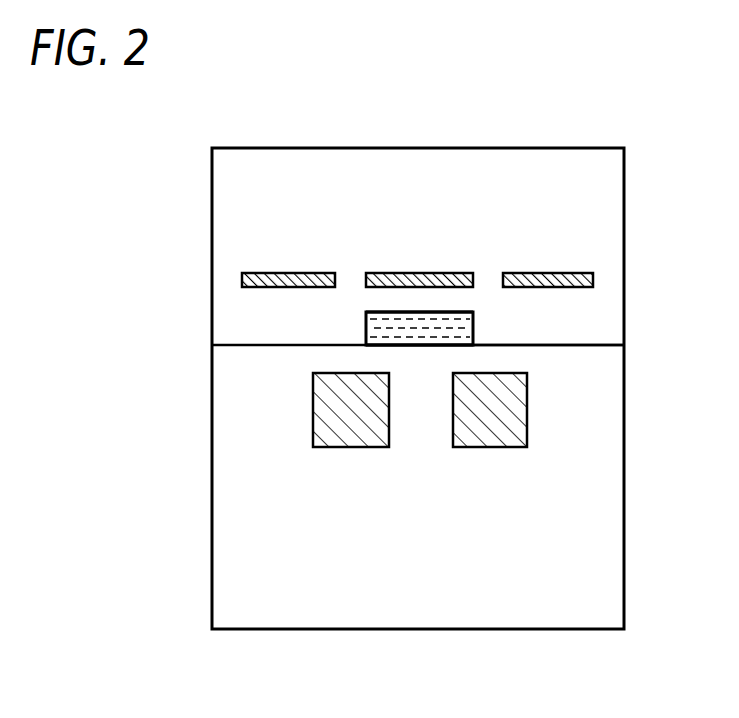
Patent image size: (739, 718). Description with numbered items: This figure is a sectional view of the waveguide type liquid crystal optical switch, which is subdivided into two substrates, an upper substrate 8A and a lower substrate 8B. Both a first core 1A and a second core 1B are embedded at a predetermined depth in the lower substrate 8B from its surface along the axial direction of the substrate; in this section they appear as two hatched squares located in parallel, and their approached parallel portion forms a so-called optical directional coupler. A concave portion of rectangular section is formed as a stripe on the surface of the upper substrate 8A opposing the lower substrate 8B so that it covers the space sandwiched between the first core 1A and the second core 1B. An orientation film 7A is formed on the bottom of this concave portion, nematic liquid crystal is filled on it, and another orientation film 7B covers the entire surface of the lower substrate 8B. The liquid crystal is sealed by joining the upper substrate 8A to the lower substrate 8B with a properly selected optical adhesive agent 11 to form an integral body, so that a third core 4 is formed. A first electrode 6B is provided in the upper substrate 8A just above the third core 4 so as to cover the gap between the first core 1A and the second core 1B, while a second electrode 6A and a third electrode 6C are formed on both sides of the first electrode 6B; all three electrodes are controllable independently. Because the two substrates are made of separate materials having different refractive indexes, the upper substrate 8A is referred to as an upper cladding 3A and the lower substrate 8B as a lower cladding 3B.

The first core 1A is at (325, 435).
The second core 1B is at (512, 428).
The upper cladding 3A is at (540, 167).
The lower cladding 3B is at (482, 583).
The third core 4 is at (473, 328).
The second electrode 6A is at (290, 273).
The first electrode 6B is at (417, 273).
The third electrode 6C is at (550, 273).
The orientation film 7A is at (447, 312).
The orientation film 7B is at (387, 345).
The upper substrate 8A is at (417, 167).
The lower substrate 8B is at (325, 602).
The optical adhesive agent 11 is at (605, 344).